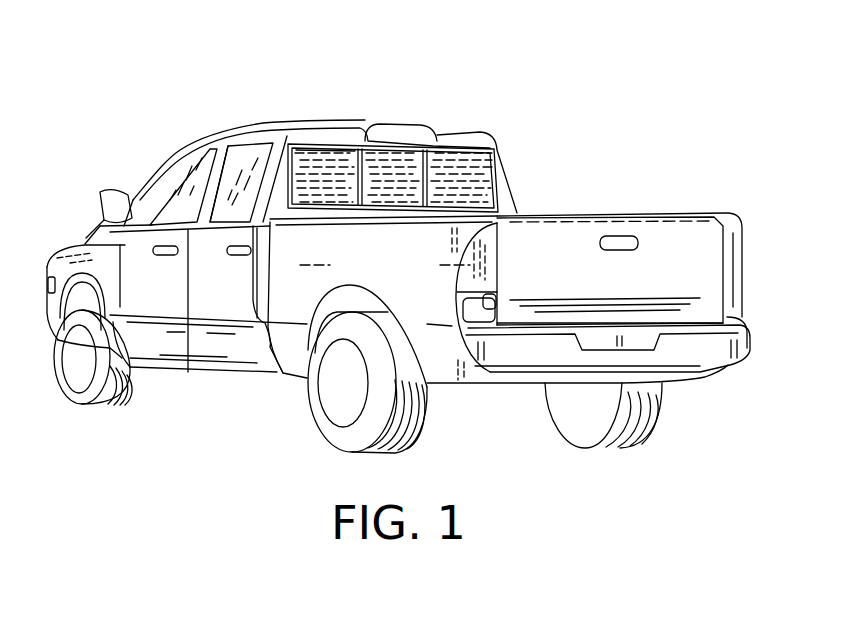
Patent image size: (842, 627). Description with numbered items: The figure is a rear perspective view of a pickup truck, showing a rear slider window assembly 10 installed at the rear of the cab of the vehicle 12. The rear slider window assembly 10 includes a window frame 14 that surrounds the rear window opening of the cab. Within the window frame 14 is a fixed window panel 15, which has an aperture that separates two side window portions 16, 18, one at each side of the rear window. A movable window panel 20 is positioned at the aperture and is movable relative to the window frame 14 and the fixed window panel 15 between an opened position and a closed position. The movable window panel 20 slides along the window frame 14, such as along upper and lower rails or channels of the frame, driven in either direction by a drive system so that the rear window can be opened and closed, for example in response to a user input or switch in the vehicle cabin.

The rear slider window assembly 10 is at (478, 190).
The vehicle 12 is at (208, 110).
The window frame 14 is at (338, 137).
The fixed window panel 15 is at (442, 146).
The side window portion 16 is at (307, 158).
The side window portion 18 is at (478, 162).
The movable window panel 20 is at (403, 146).